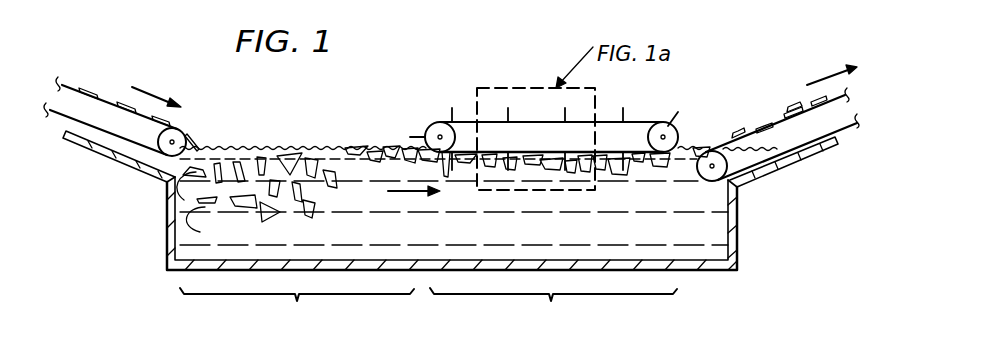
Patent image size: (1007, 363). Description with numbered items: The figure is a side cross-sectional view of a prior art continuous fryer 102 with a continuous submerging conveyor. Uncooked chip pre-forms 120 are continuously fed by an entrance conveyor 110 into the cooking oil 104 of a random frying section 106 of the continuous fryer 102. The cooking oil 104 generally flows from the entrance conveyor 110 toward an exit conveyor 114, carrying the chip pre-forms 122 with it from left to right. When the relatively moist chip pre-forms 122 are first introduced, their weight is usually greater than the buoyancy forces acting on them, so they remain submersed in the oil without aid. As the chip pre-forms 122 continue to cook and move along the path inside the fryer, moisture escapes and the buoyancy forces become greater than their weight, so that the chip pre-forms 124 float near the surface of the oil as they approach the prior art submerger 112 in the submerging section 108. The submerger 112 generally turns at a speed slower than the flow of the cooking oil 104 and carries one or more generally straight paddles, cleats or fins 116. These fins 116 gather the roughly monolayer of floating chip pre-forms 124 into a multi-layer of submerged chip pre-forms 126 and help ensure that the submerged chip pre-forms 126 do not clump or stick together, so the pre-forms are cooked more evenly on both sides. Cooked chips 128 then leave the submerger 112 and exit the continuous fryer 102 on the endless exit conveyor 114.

The continuous fryer 102 is at (167, 238).
The cooking oil 104 is at (713, 232).
The random frying section 106 is at (297, 310).
The submerging section 108 is at (553, 310).
The entrance conveyor 110 is at (107, 100).
The prior art submerger 112 is at (637, 119).
The exit conveyor 114 is at (853, 123).
The paddle or fin 116 is at (452, 110).
The uncooked chip pre-form 120 is at (92, 92).
The moist chip pre-form 122 is at (287, 157).
The floating chip pre-form 124 is at (350, 144).
The submerged chip pre-form 126 is at (532, 170).
The cooked chips 128 is at (792, 113).